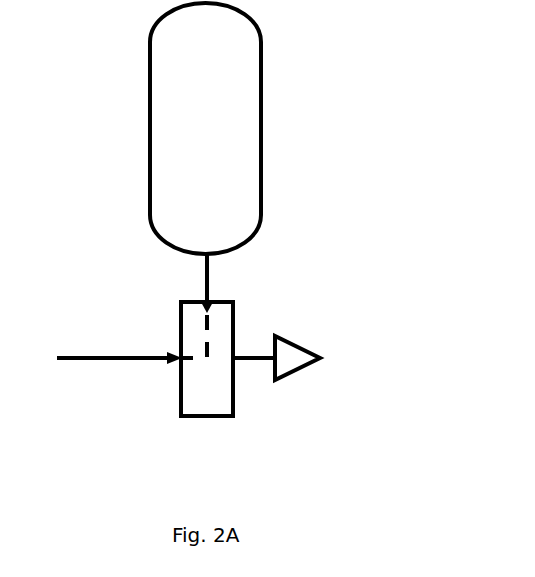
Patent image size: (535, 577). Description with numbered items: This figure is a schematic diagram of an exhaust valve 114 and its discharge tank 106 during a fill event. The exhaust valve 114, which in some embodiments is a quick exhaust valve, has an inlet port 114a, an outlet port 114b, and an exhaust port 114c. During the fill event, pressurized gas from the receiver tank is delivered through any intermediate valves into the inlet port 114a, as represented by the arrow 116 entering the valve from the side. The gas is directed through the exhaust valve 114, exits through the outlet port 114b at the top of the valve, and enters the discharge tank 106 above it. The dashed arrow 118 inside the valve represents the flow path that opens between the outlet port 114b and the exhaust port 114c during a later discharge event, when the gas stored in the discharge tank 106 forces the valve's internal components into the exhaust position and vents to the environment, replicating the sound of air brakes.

The discharge tank 106 is at (205, 128).
The exhaust valve 114 is at (198, 418).
The inlet port 114a is at (177, 354).
The outlet port 114b is at (210, 297).
The exhaust port 114c is at (290, 335).
The arrow representing pressurized gas delivery 116 is at (100, 360).
The arrow representing flow path 118 is at (210, 353).